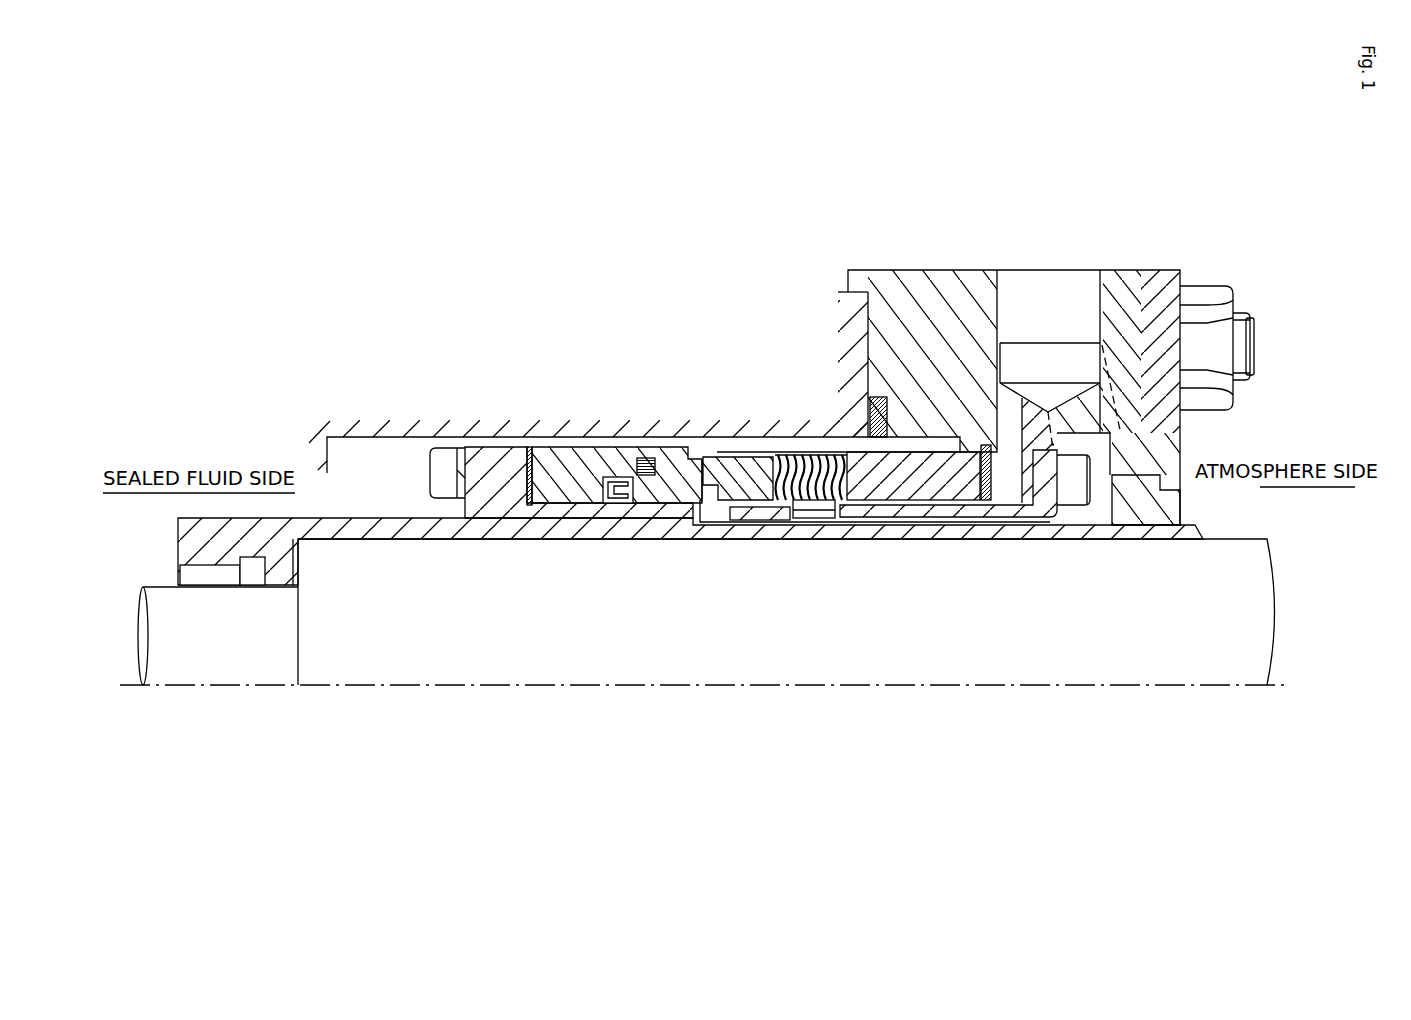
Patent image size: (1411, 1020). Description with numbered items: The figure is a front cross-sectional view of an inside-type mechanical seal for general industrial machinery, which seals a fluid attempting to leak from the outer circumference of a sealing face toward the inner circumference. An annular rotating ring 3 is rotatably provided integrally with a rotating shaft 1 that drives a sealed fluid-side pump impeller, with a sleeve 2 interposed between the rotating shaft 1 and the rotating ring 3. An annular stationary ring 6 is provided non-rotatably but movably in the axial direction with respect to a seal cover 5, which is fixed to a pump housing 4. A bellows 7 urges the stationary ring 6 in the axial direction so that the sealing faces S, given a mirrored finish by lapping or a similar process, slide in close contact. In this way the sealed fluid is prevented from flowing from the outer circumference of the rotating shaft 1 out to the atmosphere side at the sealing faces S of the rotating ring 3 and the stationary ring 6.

The rotating shaft 1 is at (366, 647).
The sleeve 2 is at (968, 541).
The rotating ring 3 is at (662, 459).
The pump housing 4 is at (548, 385).
The seal cover 5 is at (905, 271).
The stationary ring 6 is at (718, 457).
The bellows 7 is at (802, 460).
The sealing faces S is at (700, 478).